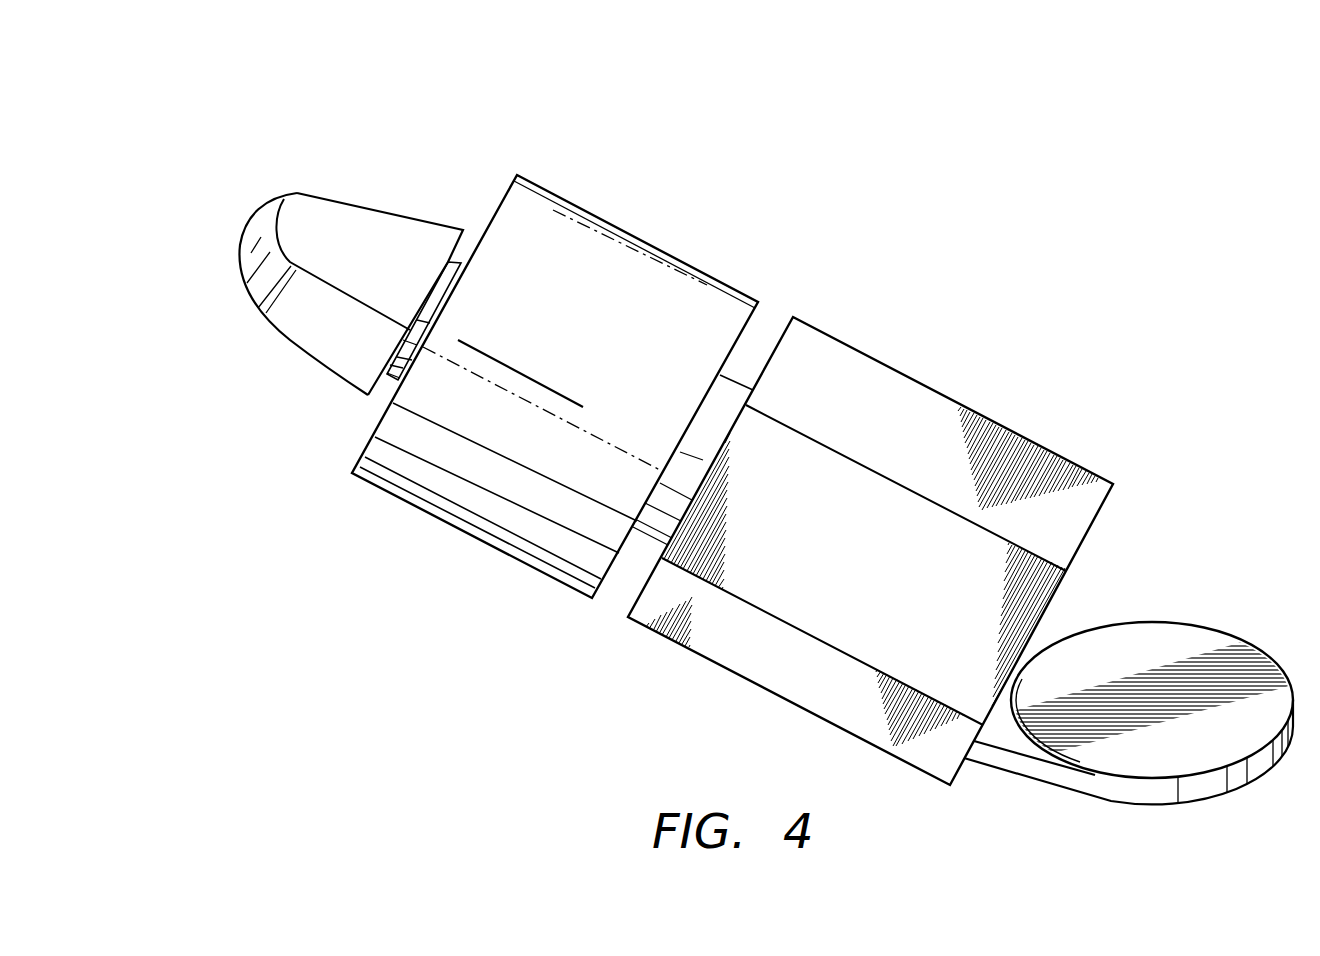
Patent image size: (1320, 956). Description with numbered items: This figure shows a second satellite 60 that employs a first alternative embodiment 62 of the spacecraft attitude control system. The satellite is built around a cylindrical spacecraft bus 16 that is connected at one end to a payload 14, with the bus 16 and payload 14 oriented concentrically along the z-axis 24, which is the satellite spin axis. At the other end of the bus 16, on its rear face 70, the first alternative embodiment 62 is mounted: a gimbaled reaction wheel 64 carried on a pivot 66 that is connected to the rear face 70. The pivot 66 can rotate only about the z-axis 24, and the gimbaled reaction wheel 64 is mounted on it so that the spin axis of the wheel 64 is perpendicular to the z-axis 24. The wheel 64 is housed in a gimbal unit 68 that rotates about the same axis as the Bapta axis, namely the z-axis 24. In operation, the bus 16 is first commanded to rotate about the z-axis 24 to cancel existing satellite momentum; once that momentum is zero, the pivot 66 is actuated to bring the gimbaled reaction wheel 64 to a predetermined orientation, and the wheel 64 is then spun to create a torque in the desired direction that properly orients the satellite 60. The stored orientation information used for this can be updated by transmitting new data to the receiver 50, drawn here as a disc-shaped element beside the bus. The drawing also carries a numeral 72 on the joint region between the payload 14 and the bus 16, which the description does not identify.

The payload 14 is at (847, 365).
The cylindrical spacecraft bus 16 is at (615, 258).
The z-axis 24 is at (498, 362).
The receiver 50 is at (1153, 633).
The second satellite 60 is at (748, 118).
The first alternative embodiment 62 is at (517, 137).
The gimbaled reaction wheel 64 is at (253, 227).
The pivot 66 is at (473, 230).
The gimbal unit 68 is at (347, 197).
The rear face 70 is at (363, 448).
The connecting strip 72 is at (737, 380).